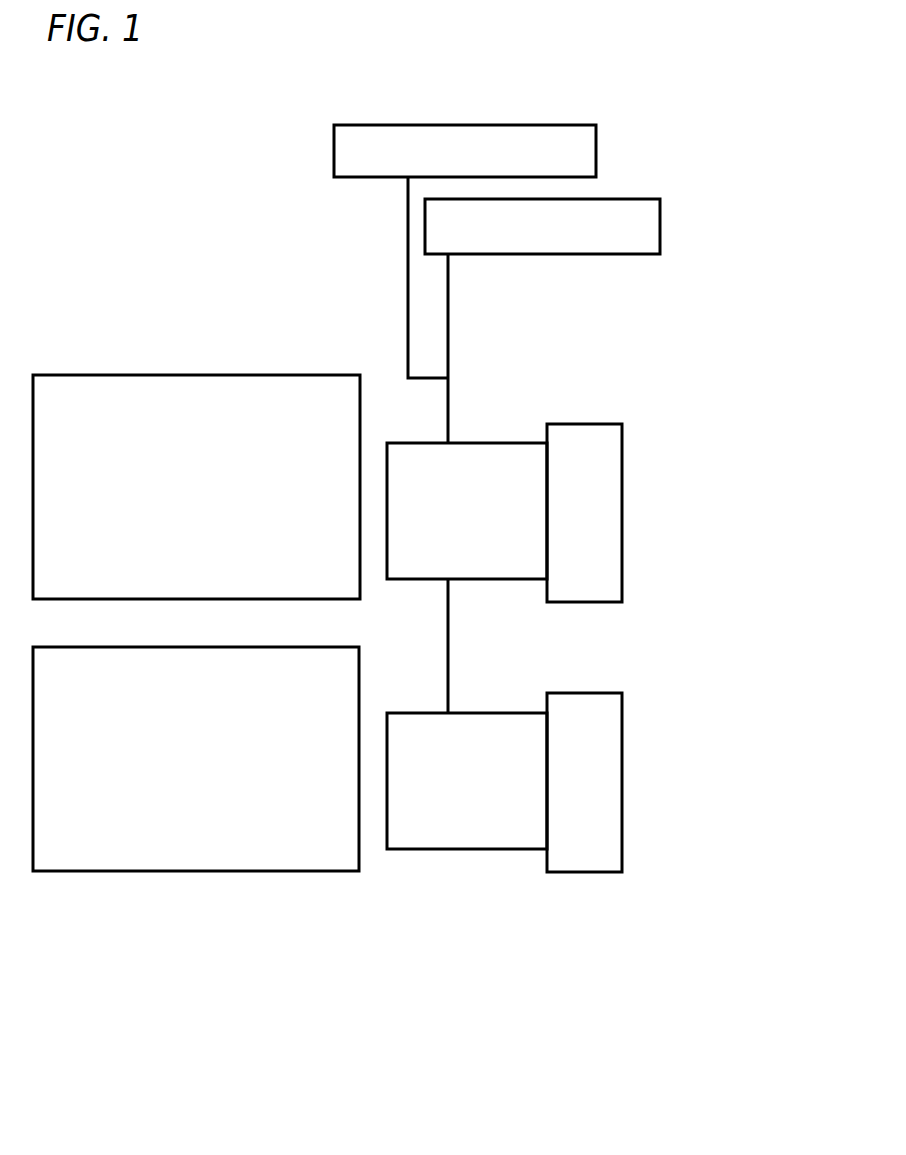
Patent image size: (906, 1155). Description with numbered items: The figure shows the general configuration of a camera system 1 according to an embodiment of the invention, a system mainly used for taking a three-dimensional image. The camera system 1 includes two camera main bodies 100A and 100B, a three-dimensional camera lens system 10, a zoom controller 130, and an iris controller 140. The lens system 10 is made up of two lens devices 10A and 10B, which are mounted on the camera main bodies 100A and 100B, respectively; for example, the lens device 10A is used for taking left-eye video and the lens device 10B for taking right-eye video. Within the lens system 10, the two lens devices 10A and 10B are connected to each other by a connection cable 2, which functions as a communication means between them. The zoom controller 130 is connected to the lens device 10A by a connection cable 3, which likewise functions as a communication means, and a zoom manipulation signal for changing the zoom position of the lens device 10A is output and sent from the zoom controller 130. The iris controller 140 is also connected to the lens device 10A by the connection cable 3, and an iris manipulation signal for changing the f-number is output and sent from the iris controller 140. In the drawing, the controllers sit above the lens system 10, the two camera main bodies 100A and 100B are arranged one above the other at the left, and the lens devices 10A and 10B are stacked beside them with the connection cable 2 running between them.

The camera system 1 is at (503, 382).
The connection cable 2 is at (448, 638).
The connection cable 3 is at (408, 295).
The 3D camera lens system 10 is at (741, 595).
The lens device 10A is at (588, 603).
The lens device 10B is at (590, 692).
The camera main body 100A is at (220, 374).
The camera main body 100B is at (204, 873).
The zoom controller 130 is at (660, 216).
The iris controller 140 is at (596, 142).